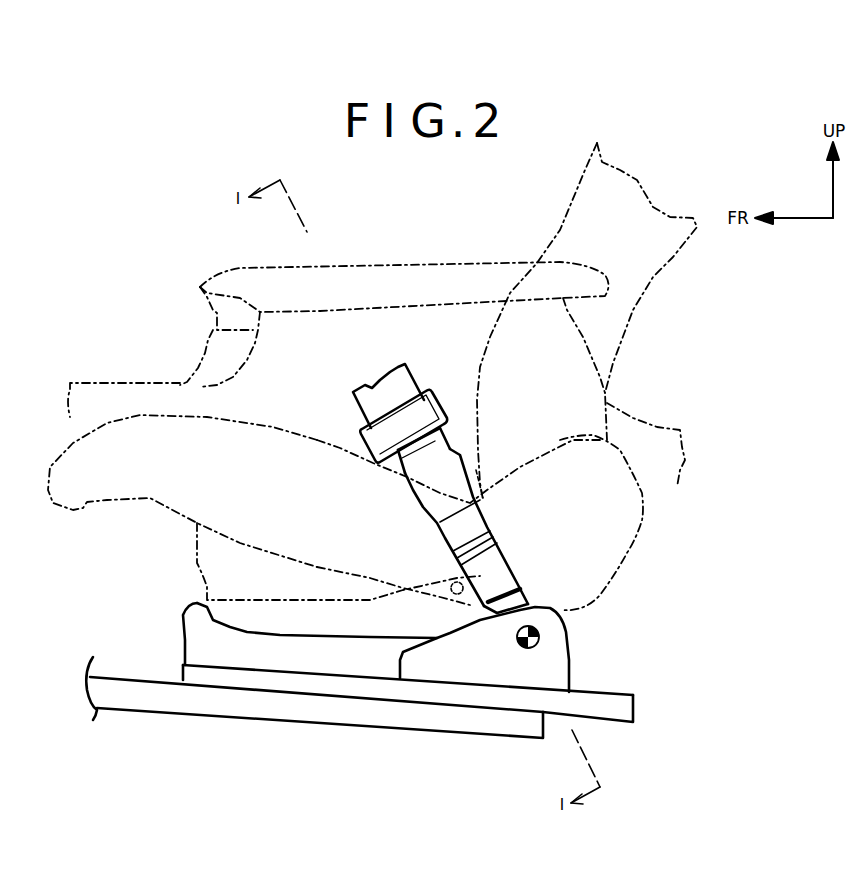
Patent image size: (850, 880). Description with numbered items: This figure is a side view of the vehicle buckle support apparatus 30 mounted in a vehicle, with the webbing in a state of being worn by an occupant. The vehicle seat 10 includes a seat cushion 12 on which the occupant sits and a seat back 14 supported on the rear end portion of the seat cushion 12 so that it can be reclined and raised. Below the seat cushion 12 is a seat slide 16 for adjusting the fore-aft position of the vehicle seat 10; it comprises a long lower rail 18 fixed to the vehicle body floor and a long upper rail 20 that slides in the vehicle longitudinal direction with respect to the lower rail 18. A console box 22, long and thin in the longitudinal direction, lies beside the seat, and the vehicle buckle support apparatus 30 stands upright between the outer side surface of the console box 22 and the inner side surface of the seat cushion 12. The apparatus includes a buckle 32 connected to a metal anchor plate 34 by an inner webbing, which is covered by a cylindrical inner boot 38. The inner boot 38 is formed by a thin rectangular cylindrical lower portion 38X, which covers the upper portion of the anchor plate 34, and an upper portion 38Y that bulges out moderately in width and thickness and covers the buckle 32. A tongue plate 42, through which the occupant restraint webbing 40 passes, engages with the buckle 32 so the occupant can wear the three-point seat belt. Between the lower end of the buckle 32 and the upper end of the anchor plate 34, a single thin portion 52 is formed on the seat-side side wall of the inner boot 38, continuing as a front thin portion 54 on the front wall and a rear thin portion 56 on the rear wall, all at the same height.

The vehicle seat 10 is at (631, 321).
The seat cushion 12 is at (643, 523).
The seat back 14 is at (657, 273).
The seat slide 16 is at (636, 706).
The lower rail 18 is at (300, 720).
The upper rail 20 is at (609, 702).
The console box 22 is at (405, 262).
The vehicle buckle support apparatus 30 is at (486, 475).
The buckle 32 is at (400, 471).
The anchor plate 34 is at (547, 607).
The inner boot 38 is at (407, 492).
The lower portion 38X is at (477, 586).
The upper portion 38Y is at (458, 477).
The occupant restraint webbing 40 is at (382, 392).
The tongue plate 42 is at (441, 392).
The thin portion 52 is at (487, 552).
The front thin portion 54 is at (453, 558).
The rear thin portion 56 is at (478, 527).